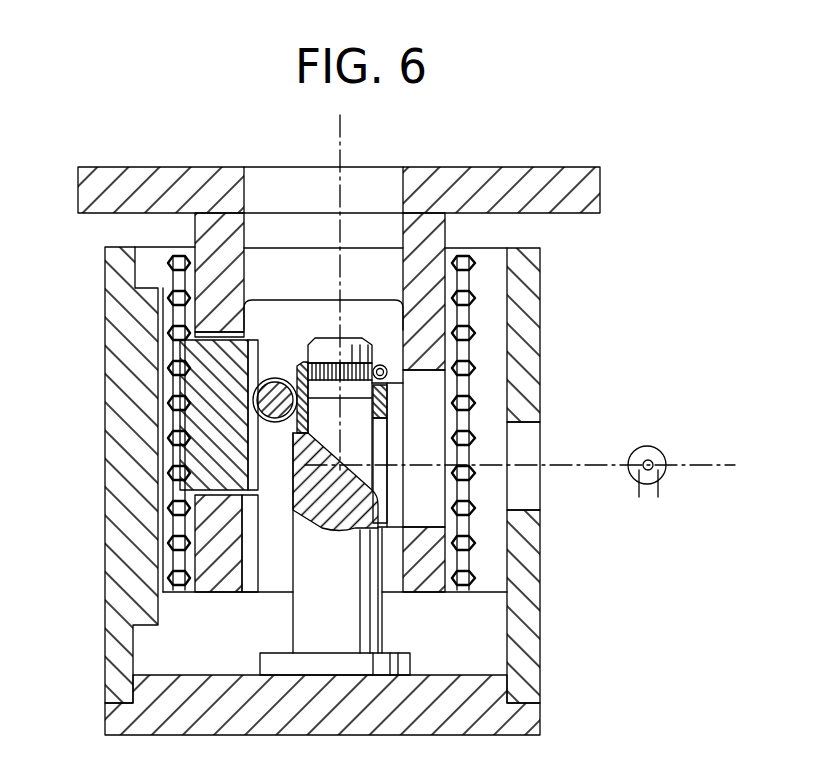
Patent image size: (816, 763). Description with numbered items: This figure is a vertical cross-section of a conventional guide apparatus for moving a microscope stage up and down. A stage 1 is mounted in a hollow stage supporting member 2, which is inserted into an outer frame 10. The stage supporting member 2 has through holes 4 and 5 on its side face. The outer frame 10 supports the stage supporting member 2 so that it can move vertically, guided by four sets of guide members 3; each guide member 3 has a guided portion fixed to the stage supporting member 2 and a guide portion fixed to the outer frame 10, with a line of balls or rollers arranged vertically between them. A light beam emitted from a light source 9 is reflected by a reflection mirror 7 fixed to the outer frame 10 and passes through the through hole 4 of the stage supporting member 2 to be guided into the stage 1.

The stage 1 is at (577, 167).
The stage supporting member 2 is at (433, 230).
The guide member 3 is at (165, 312).
The through hole 4 is at (436, 520).
The through hole 5 is at (245, 528).
The reflection mirror 7 is at (345, 512).
The light source 9 is at (648, 447).
The outer frame 10 is at (528, 381).